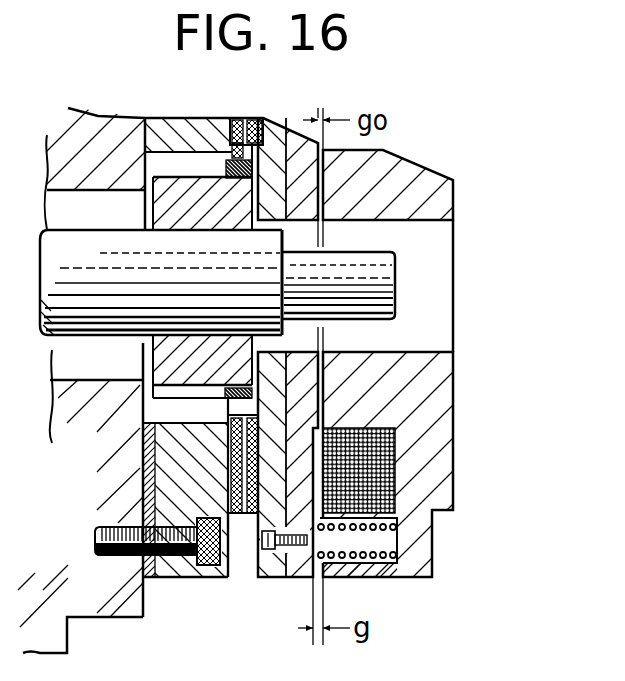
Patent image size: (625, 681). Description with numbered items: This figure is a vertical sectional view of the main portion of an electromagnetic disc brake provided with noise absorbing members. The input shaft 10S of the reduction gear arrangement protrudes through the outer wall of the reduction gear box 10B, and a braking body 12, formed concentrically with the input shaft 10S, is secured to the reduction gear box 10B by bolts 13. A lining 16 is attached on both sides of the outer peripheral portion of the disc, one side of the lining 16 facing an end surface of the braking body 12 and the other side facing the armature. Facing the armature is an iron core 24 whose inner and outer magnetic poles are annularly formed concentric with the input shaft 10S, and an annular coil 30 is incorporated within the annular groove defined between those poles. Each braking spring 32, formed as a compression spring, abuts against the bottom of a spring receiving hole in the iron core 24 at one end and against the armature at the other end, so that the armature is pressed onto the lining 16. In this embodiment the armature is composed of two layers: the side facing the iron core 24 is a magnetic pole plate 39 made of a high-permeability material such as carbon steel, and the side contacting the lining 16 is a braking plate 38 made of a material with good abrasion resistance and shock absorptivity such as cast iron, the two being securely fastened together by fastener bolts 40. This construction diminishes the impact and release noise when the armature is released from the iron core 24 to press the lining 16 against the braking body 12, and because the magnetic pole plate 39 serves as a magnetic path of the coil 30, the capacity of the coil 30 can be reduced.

The lining 16 is at (240, 118).
The input shaft 10S is at (396, 262).
The iron core 24 is at (447, 378).
The coil 30 is at (396, 458).
The braking spring 32 is at (387, 578).
The braking plate 38 is at (268, 581).
The magnetic pole plate 39 is at (285, 574).
The fastener bolt 40 is at (258, 547).
The bolt 13 is at (195, 552).
The braking body 12 is at (196, 577).
The reduction gear box 10B is at (112, 608).